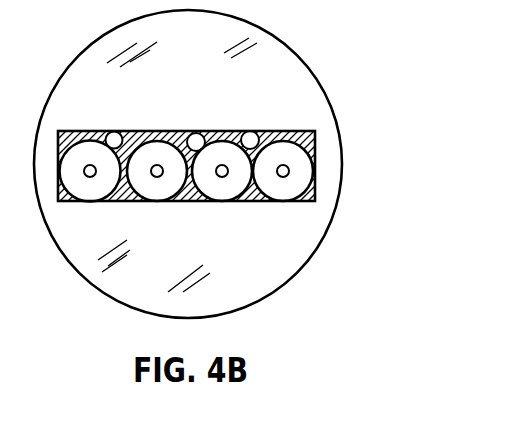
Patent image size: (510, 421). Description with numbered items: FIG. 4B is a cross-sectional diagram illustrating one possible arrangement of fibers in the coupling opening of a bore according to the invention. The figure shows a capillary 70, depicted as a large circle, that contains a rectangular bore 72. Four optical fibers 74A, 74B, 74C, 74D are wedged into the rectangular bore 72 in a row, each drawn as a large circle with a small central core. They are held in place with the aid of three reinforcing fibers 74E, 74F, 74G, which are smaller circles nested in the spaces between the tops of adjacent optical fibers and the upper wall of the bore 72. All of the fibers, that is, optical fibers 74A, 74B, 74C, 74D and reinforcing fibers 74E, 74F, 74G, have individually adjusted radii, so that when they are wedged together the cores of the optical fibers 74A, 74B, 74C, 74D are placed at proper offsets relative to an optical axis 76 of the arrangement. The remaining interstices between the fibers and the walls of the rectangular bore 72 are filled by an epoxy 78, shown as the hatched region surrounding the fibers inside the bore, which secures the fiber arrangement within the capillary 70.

The capillary 70 is at (285, 38).
The rectangular bore 72 is at (183, 198).
The optical fiber 74A is at (68, 150).
The optical fiber 74B is at (150, 188).
The optical fiber 74C is at (220, 189).
The optical fiber 74D is at (280, 189).
The reinforcing fiber 74E is at (120, 131).
The reinforcing fiber 74F is at (208, 132).
The reinforcing fiber 74G is at (250, 131).
The optical axis 76 is at (190, 131).
The epoxy 78 is at (316, 132).